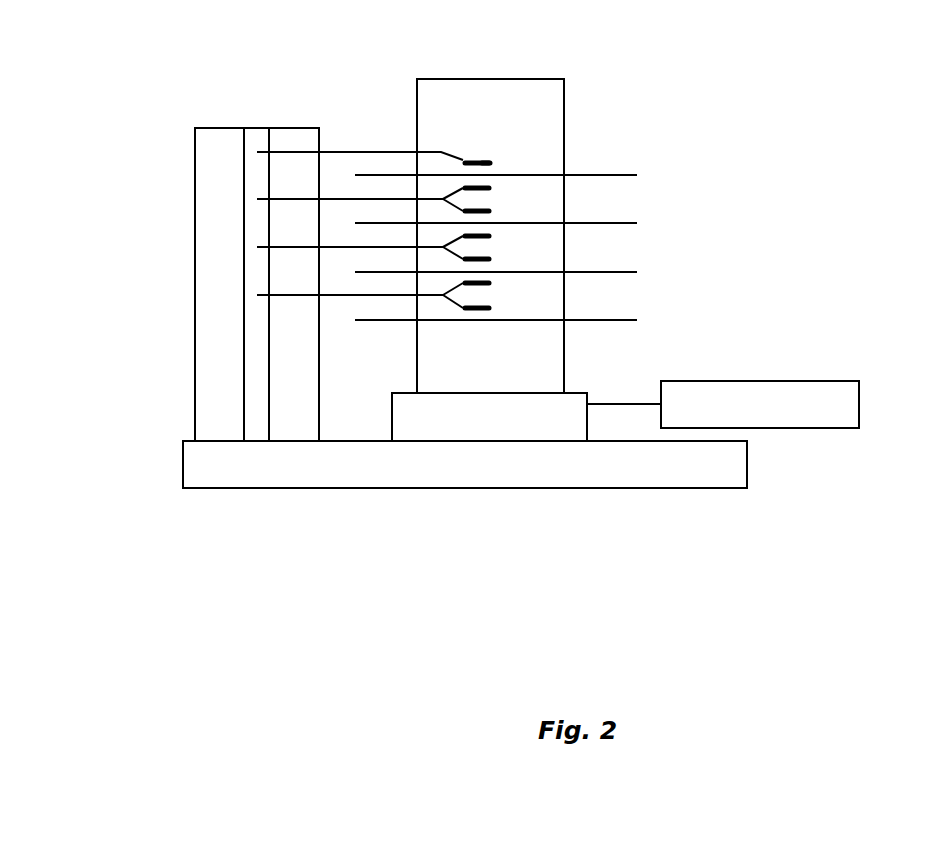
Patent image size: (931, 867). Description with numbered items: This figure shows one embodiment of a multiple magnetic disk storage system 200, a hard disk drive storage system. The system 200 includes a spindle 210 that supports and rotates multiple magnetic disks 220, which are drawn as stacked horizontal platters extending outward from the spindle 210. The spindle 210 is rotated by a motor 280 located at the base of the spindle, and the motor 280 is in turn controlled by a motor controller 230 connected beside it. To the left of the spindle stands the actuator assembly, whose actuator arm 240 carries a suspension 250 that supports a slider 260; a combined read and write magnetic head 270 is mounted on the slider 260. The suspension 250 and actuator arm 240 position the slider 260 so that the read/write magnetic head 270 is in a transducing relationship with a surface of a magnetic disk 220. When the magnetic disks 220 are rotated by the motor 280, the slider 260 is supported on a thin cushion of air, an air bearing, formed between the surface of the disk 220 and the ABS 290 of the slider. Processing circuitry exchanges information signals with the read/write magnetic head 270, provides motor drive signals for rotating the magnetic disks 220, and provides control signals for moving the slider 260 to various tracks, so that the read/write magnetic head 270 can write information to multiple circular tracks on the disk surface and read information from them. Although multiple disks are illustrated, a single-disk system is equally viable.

The magnetic disk storage system 200 is at (69, 564).
The spindle 210 is at (552, 79).
The magnetic disks 220 is at (601, 175).
The motor controller 230 is at (787, 381).
The actuator arm 240 is at (368, 150).
The suspension 250 is at (453, 152).
The slider 260 is at (480, 162).
The read/write magnetic head 270 is at (490, 310).
The motor 280 is at (577, 393).
The ABS 290 is at (483, 160).